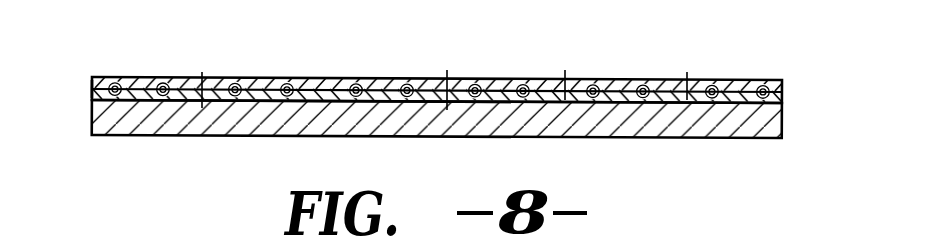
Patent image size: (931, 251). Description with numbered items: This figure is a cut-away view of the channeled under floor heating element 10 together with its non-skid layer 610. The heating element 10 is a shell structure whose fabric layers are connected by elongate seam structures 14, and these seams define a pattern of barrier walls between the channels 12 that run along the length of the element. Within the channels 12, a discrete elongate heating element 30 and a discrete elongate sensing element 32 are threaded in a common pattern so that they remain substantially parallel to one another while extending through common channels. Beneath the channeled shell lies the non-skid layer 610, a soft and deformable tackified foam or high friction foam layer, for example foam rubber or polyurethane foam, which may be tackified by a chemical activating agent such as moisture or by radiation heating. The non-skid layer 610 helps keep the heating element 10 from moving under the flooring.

The under floor heating element 10 is at (424, 100).
The channels 12 is at (92, 86).
The elongate seam structures 14 is at (437, 56).
The elongate heating element 30 is at (97, 77).
The elongate sensing element 32 is at (152, 77).
The non-skid layer 610 is at (712, 138).